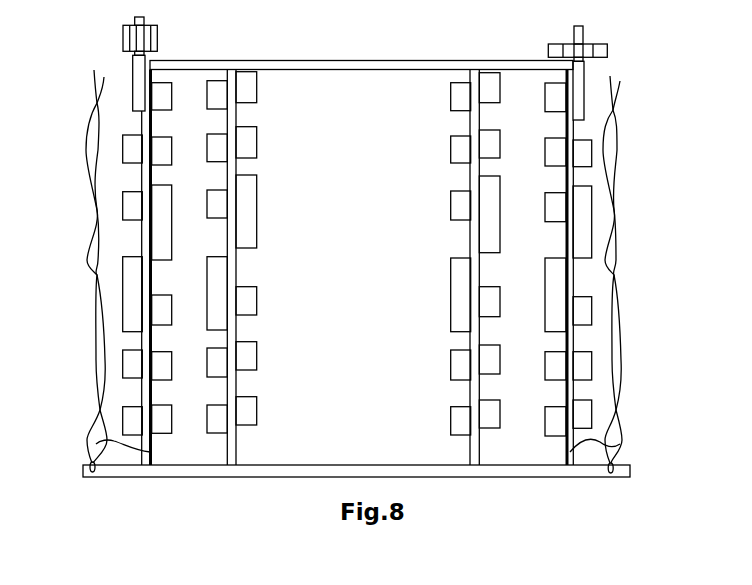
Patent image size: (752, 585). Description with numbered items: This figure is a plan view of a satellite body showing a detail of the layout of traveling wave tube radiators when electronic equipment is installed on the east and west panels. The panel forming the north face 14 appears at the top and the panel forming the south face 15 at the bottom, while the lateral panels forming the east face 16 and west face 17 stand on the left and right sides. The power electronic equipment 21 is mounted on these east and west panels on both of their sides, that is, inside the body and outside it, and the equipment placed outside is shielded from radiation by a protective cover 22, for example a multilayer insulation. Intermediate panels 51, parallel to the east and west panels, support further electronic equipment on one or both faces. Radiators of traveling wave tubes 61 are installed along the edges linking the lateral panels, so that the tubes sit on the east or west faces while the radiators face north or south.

The north face panel 14 is at (450, 60).
The south face panel 15 is at (533, 477).
The east face panel 16 is at (620, 444).
The west face panel 17 is at (96, 444).
The power electronic equipment 21 is at (250, 142).
The protective cover 22 is at (100, 360).
The intermediate panel 51 is at (232, 273).
The traveling wave tube radiator 61 is at (137, 70).